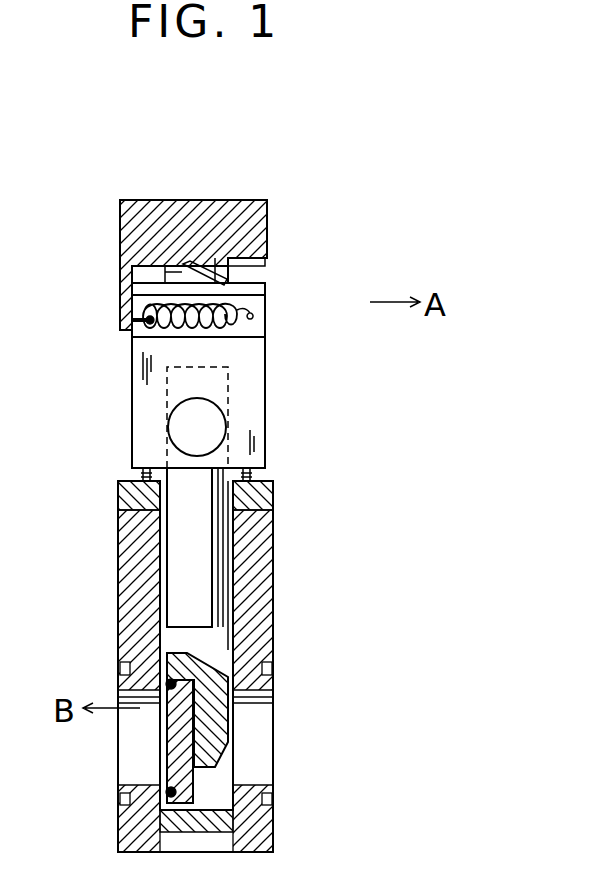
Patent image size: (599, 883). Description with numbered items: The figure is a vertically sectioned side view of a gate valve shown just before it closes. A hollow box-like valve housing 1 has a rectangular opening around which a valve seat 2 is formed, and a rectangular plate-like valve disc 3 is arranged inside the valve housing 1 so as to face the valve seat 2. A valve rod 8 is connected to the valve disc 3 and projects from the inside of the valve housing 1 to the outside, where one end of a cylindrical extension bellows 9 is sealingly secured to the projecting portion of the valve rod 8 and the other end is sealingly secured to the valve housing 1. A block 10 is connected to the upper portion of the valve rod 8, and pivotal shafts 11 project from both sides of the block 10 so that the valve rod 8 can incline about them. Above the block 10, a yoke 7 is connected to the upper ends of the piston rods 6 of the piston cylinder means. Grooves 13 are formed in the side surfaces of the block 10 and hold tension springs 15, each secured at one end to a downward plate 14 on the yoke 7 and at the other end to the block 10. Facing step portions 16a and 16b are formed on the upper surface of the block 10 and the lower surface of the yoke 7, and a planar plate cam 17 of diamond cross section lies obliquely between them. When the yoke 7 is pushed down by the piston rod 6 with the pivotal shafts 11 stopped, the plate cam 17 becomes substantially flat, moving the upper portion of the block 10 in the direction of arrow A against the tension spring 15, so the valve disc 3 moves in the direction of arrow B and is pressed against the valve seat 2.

The valve housing 1 is at (118, 585).
The valve seat 2 is at (168, 758).
The valve disc 3 is at (200, 783).
The piston rod 6 is at (152, 268).
The yoke 7 is at (267, 215).
The valve rod 8 is at (213, 597).
The extension bellows 9 is at (270, 478).
The block 10 is at (265, 370).
The pivotal shaft 11 is at (213, 424).
The groove 13 is at (133, 336).
The downward plate 14 is at (132, 285).
The tension spring 15 is at (265, 322).
The step portion 16a is at (265, 284).
The step portion 16b is at (181, 266).
The planar plate cam 17 is at (265, 262).